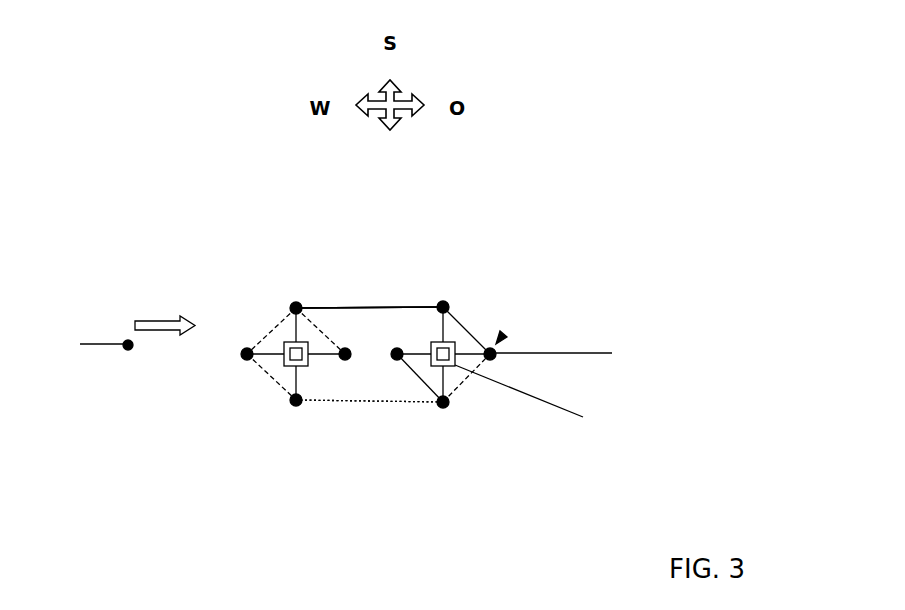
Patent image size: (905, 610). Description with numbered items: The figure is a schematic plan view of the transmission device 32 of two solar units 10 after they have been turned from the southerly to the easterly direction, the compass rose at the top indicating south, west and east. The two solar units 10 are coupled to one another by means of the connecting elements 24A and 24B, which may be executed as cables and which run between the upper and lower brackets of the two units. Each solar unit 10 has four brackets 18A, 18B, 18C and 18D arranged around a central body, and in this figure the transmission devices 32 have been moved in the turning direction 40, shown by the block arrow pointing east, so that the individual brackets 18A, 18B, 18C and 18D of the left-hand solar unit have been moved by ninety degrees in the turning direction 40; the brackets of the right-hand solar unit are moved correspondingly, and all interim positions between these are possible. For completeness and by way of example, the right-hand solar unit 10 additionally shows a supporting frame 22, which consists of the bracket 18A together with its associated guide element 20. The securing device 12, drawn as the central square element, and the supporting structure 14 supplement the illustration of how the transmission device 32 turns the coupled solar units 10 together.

The solar unit 10 is at (233, 250).
The transmission device 32 is at (137, 200).
The securing device 12 is at (473, 351).
The supporting structure 14 is at (558, 400).
The bracket 18A is at (325, 360).
The bracket 18B is at (300, 310).
The bracket 18C is at (300, 310).
The bracket 18D is at (290, 382).
The guide element 20 is at (575, 353).
The supporting frame 22 is at (503, 335).
The connecting element 24A is at (385, 306).
The connecting element 24B is at (398, 404).
The turning direction 40 is at (81, 352).